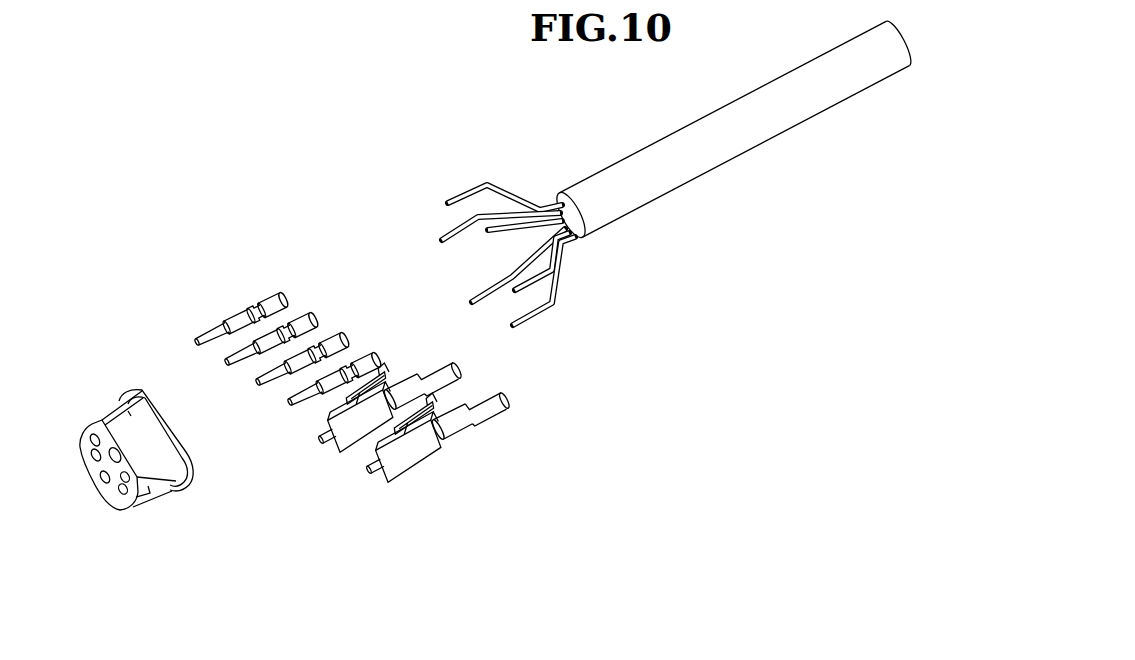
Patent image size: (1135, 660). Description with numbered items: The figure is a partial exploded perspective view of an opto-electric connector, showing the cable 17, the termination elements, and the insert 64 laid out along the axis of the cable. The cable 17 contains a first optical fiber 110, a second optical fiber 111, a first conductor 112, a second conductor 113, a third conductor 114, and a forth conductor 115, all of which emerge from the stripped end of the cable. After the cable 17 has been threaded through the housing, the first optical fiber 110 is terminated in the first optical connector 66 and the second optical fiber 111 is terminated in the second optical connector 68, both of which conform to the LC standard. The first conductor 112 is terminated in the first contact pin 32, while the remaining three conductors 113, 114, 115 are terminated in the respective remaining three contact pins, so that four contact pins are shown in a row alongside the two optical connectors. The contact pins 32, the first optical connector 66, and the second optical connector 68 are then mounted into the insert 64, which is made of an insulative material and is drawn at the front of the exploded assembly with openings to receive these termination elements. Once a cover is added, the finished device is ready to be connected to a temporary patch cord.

The cable 17 is at (797, 115).
The contact pin 32 is at (271, 293).
The insert 64 is at (167, 490).
The first optical connector 66 is at (487, 428).
The second optical connector 68 is at (473, 381).
The first optical fiber 110 is at (527, 322).
The second optical fiber 111 is at (550, 277).
The first conductor 112 is at (472, 302).
The second conductor 113 is at (488, 232).
The third conductor 114 is at (440, 234).
The forth conductor 115 is at (470, 184).